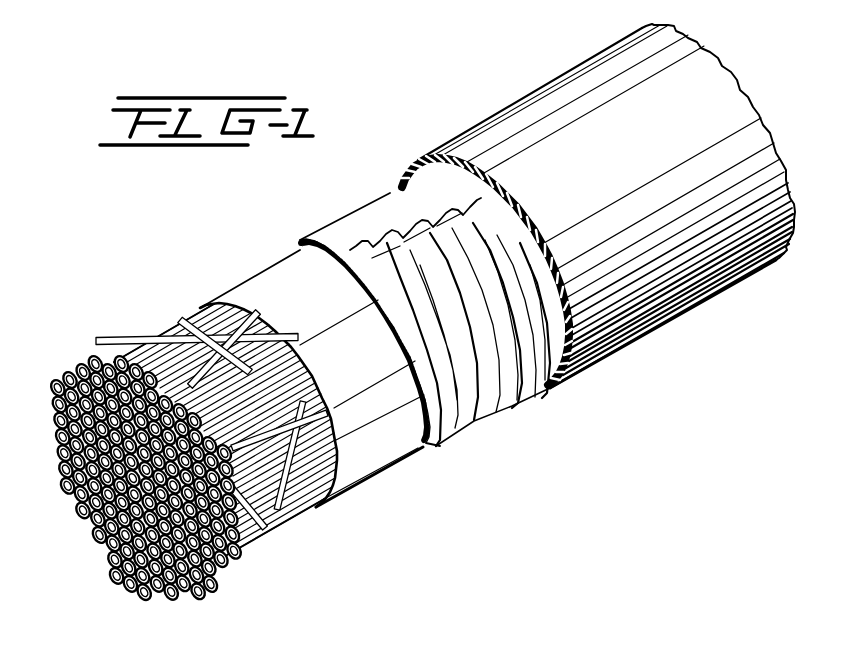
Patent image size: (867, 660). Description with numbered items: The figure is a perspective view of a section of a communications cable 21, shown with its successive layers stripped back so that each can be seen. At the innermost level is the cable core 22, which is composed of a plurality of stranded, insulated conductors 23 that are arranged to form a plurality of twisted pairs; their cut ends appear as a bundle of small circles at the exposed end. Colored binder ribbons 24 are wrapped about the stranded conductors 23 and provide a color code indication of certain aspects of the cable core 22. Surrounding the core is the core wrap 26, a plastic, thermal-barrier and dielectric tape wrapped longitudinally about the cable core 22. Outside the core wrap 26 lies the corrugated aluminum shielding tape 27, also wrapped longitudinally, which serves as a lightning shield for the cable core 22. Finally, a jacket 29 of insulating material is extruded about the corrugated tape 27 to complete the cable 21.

The communications cable 21 is at (547, 248).
The cable core 22 is at (188, 460).
The stranded, insulated conductors 23 is at (188, 447).
The colored binder ribbons 24 is at (103, 338).
The core wrap 26 is at (260, 293).
The corrugated aluminum shielding tape 27 is at (440, 445).
The jacket 29 is at (527, 95).